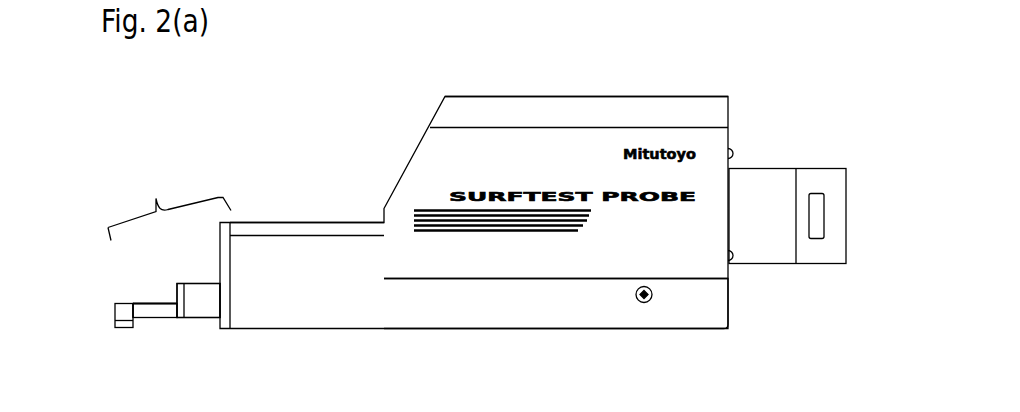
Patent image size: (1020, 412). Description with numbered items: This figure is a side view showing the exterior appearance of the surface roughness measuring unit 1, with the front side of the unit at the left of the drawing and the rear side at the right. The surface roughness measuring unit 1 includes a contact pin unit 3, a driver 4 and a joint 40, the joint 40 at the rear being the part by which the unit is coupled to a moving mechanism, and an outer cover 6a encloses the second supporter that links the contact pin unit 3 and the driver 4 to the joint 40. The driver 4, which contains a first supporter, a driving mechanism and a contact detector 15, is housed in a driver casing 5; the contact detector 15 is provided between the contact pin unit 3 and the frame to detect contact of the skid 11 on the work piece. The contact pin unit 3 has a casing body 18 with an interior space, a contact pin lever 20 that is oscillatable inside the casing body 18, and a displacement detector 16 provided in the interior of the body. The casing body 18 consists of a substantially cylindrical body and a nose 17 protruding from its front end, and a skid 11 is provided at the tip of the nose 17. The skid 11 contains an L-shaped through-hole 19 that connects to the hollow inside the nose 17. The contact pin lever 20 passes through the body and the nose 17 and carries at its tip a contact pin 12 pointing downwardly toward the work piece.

The surface roughness measuring unit 1 is at (310, 123).
The contact pin unit 3 is at (169, 205).
The driver 4 is at (340, 221).
The driver casing 5 is at (392, 329).
The outer cover 6a is at (515, 95).
The skid 11 is at (123, 302).
The contact pin 12 is at (122, 328).
The contact detector 15 is at (528, 315).
The displacement detector 16 is at (202, 312).
The nose 17 is at (162, 318).
The casing body 18 is at (190, 282).
The through-hole 19 is at (131, 302).
The contact pin lever 20 is at (154, 302).
The joint 40 is at (776, 167).